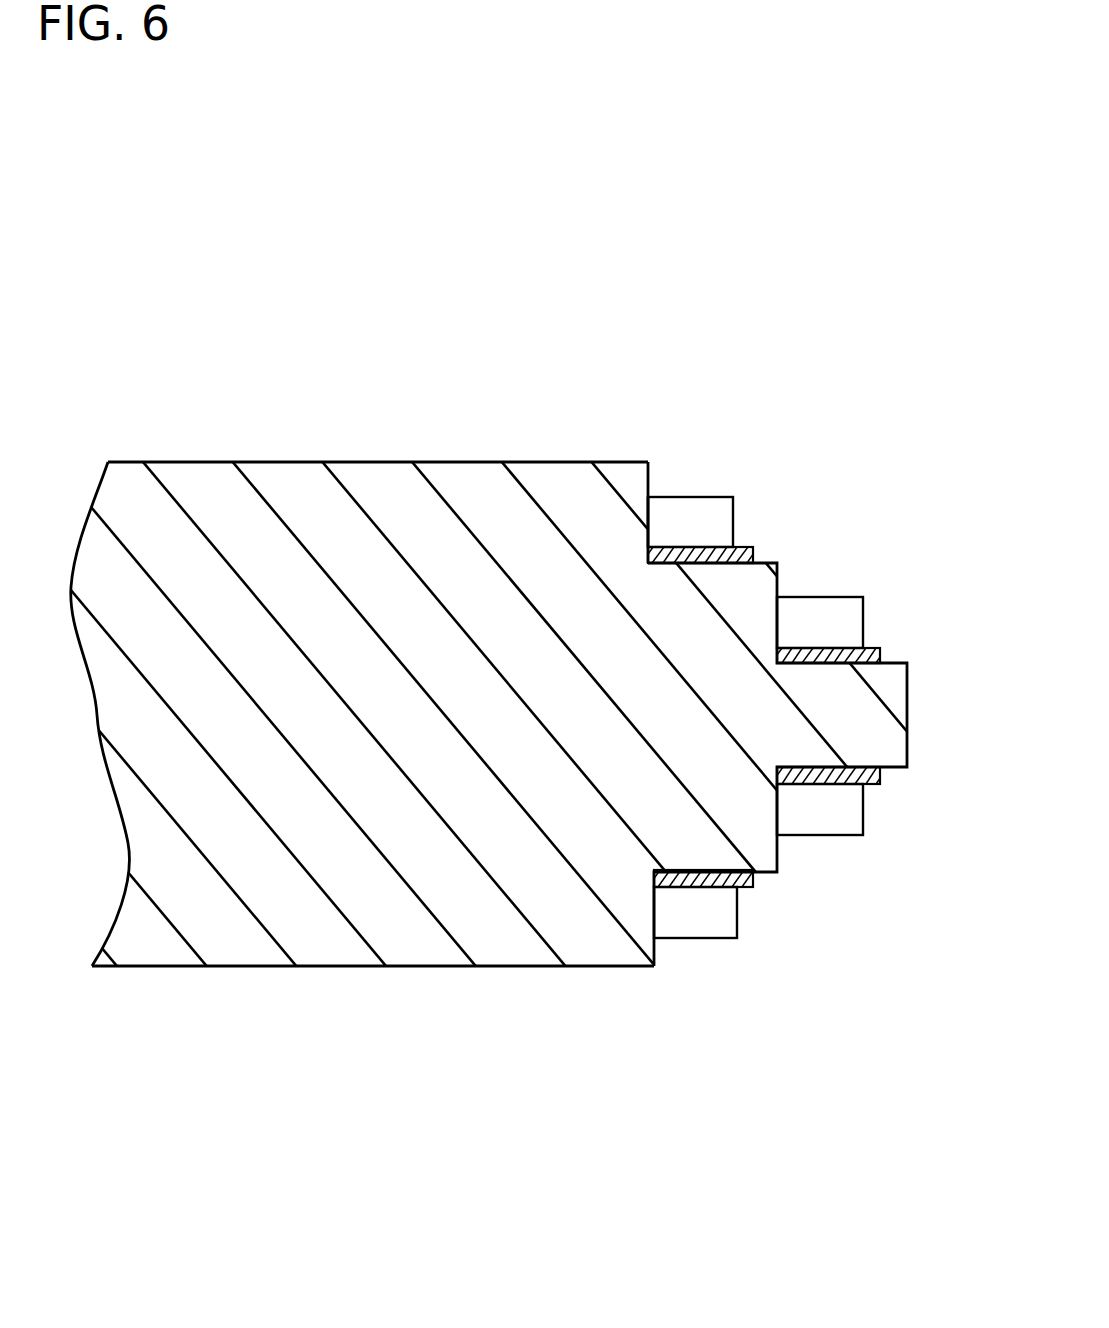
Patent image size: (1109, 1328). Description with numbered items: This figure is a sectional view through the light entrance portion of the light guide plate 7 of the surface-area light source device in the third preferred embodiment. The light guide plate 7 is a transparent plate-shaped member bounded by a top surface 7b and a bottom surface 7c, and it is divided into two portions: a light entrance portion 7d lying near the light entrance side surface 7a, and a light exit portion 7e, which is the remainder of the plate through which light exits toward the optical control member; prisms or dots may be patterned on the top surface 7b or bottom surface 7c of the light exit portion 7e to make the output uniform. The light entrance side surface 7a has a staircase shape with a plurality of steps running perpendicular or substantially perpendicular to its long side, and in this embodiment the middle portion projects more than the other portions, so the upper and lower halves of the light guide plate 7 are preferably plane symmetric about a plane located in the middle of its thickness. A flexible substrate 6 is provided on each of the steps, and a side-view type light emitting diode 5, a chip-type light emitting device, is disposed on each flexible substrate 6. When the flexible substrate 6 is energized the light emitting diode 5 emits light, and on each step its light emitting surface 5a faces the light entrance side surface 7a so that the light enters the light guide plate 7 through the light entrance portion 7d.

The light emitting diode 5 is at (715, 497).
The light emitting surface 5a is at (648, 513).
The flexible substrate 6 is at (740, 546).
The light guide plate 7 is at (554, 774).
The light entrance side surface 7a is at (650, 523).
The top surface 7b is at (227, 462).
The bottom surface 7c is at (247, 968).
The light entrance portion 7d is at (777, 774).
The light exit portion 7e is at (655, 1143).